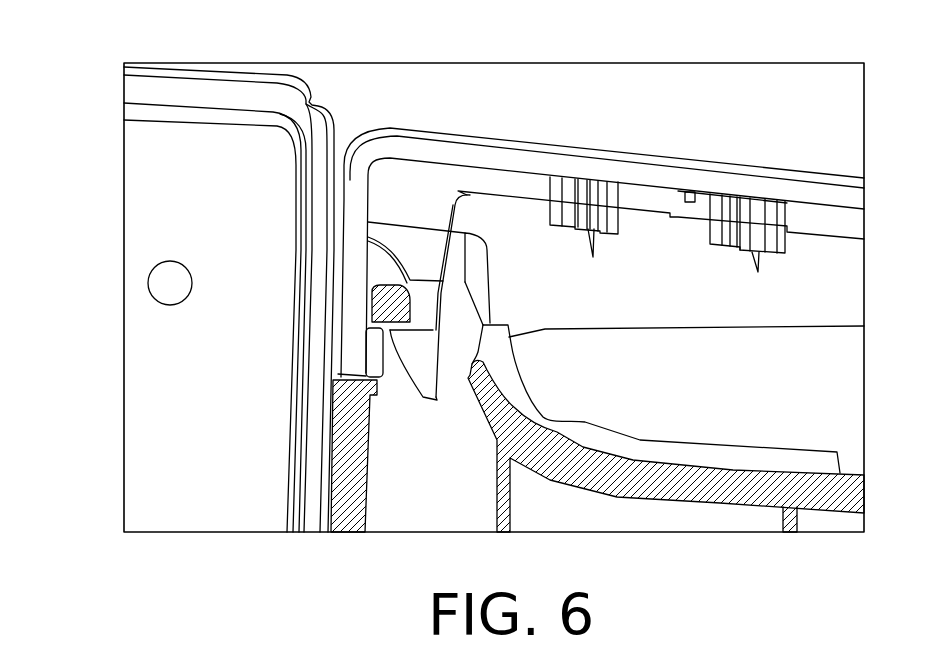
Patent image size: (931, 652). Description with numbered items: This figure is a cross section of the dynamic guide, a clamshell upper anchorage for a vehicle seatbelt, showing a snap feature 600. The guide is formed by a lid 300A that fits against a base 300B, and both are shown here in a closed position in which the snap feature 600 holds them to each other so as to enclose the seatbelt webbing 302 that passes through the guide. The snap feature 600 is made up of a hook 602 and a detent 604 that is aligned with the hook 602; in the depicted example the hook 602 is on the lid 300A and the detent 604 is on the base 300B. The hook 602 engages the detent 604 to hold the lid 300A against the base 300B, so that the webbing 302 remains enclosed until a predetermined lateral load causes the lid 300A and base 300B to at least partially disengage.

The snap feature 600 is at (79, 82).
The detent 604 is at (372, 299).
The hook 602 is at (443, 295).
The lid 300A is at (628, 148).
The webbing 302 is at (613, 422).
The base 300B is at (547, 480).